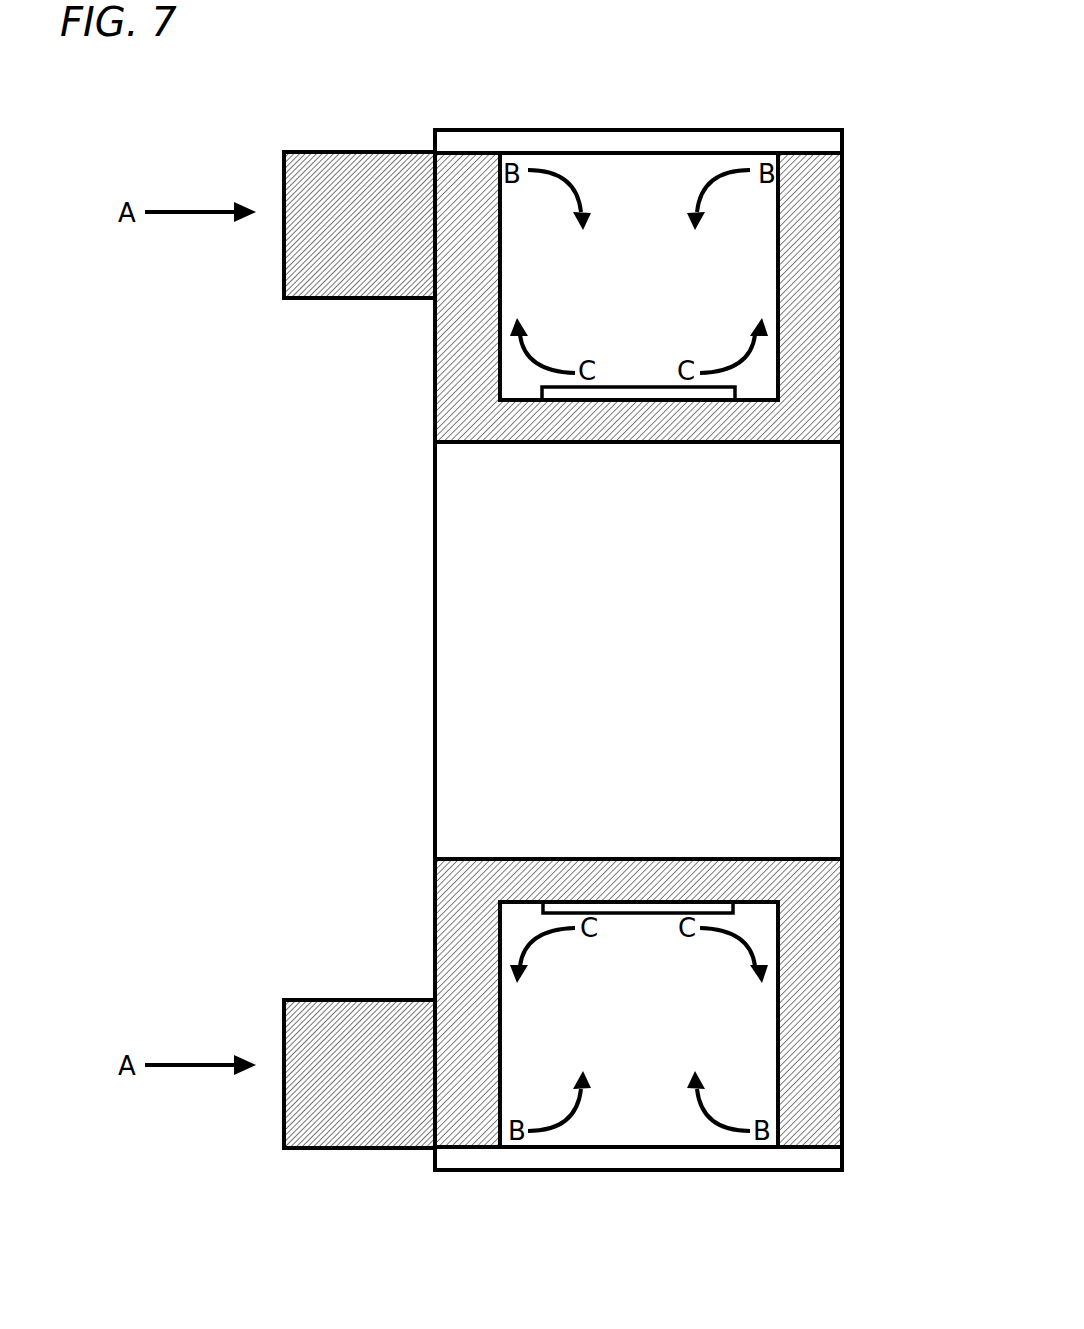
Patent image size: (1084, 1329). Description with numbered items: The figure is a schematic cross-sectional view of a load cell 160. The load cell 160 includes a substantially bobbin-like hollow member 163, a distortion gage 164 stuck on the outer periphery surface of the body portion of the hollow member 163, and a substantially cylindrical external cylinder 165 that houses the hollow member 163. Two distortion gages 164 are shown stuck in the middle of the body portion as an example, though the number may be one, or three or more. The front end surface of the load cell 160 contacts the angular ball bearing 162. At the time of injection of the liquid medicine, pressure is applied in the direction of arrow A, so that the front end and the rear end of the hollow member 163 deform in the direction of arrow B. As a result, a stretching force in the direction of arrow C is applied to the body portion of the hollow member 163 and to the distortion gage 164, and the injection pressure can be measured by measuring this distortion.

The load cell 160 is at (869, 155).
The angular ball bearing 162 is at (287, 186).
The hollow member 163 is at (435, 436).
The distortion gage 164 is at (655, 387).
The external cylinder 165 is at (447, 150).